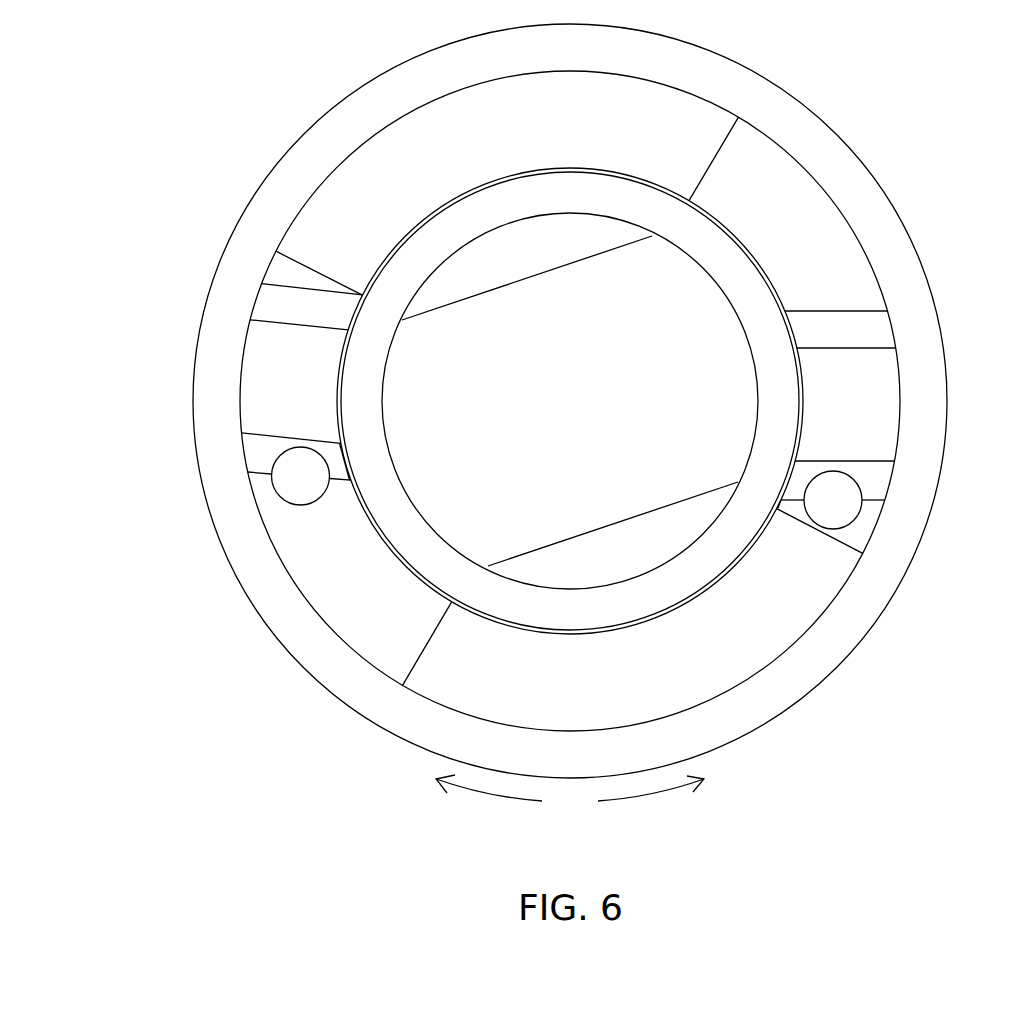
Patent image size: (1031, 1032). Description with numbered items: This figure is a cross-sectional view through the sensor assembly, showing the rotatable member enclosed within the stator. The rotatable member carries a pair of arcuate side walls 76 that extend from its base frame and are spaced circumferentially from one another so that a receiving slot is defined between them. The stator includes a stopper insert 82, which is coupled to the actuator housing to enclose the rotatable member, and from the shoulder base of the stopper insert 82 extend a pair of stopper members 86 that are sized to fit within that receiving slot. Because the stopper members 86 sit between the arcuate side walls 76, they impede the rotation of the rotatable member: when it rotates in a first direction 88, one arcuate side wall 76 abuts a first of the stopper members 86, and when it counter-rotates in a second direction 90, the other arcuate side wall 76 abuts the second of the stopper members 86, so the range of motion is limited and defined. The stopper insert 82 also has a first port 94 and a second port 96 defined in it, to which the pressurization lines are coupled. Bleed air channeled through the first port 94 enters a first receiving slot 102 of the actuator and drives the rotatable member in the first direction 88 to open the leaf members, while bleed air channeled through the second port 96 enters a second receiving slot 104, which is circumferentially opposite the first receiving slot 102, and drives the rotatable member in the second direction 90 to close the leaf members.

The arcuate side walls 76 is at (495, 144).
The stopper insert 82 is at (783, 182).
The stopper members 86 is at (258, 355).
The first direction 88 is at (657, 793).
The second direction 90 is at (493, 793).
The first port 94 is at (277, 495).
The second port 96 is at (857, 517).
The first receiving slot 102 is at (372, 622).
The second receiving slot 104 is at (825, 235).